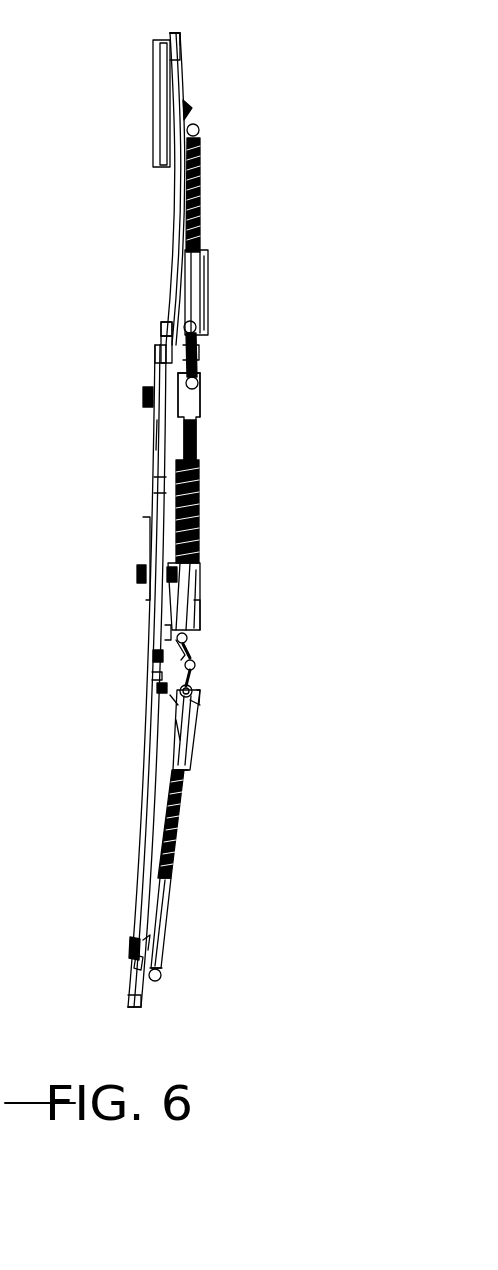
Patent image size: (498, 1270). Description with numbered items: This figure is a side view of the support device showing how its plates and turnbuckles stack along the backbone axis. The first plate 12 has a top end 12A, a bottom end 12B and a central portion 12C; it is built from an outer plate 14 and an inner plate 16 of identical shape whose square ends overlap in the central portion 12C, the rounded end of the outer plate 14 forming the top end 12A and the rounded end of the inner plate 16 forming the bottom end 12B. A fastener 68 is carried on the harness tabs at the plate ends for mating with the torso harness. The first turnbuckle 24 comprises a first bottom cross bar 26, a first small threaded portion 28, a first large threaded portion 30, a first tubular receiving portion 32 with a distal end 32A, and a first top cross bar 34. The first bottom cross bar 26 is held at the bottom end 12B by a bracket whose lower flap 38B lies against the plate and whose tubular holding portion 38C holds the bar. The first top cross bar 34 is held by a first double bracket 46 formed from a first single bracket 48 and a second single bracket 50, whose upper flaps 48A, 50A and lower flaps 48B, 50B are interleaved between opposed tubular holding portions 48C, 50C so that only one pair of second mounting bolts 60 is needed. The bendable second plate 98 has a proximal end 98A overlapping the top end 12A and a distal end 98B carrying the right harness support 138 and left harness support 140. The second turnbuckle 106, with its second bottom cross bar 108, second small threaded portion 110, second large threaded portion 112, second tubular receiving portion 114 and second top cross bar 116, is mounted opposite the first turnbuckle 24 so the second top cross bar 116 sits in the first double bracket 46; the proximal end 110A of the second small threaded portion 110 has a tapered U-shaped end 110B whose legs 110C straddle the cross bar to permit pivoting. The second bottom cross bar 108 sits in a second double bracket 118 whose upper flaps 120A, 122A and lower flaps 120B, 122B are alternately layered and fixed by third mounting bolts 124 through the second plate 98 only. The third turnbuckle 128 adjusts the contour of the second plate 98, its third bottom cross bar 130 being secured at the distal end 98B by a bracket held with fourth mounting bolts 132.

The first plate 12 is at (146, 461).
The top end 12A is at (156, 358).
The bottom end 12B is at (138, 967).
The central portion 12C is at (154, 681).
The outer plate 14 is at (153, 432).
The inner plate 16 is at (132, 985).
The first turnbuckle 24 is at (186, 807).
The first bottom cross bar 26 is at (161, 980).
The first small threaded portion 28 is at (170, 893).
The first large threaded portion 30 is at (187, 827).
The first tubular receiving portion 32 is at (197, 747).
The distal end 32A is at (200, 705).
The first top cross bar 34 is at (194, 700).
The lower flap 38B is at (143, 940).
The tubular holding portion 38C is at (162, 971).
The first double bracket 46 is at (196, 666).
The first single bracket 48 is at (193, 695).
The upper flap 48A is at (192, 688).
The lower flap 48B is at (172, 703).
The tubular holding portion 48C is at (180, 722).
The second single bracket 50 is at (187, 639).
The upper flap 50A is at (190, 642).
The lower flap 50B is at (157, 658).
The tubular holding portion 50C is at (200, 600).
The second mounting bolts 60 is at (157, 676).
The fastener 68 is at (147, 392).
The second plate 98 is at (176, 190).
The proximal end 98A is at (160, 340).
The distal end 98B is at (183, 73).
The second turnbuckle 106 is at (200, 538).
The second bottom cross bar 108 is at (200, 380).
The second small threaded portion 110 is at (200, 433).
The proximal end 110A is at (200, 410).
The U-shaped end 110B is at (200, 420).
The legs 110C is at (205, 393).
The second large threaded portion 112 is at (200, 490).
The second tubular receiving portion 114 is at (200, 577).
The second top cross bar 116 is at (167, 632).
The second double bracket 118 is at (210, 330).
The upper flap 120A is at (200, 323).
The lower flap 120B is at (153, 373).
The upper flap 122A is at (198, 348).
The lower flap 122B is at (160, 330).
The third mounting bolts 124 is at (203, 356).
The third turnbuckle 128 is at (202, 222).
The third bottom cross bar 130 is at (200, 132).
The fourth mounting bolts 132 is at (190, 108).
The right harness support 138 is at (170, 34).
The left harness support 140 is at (162, 40).